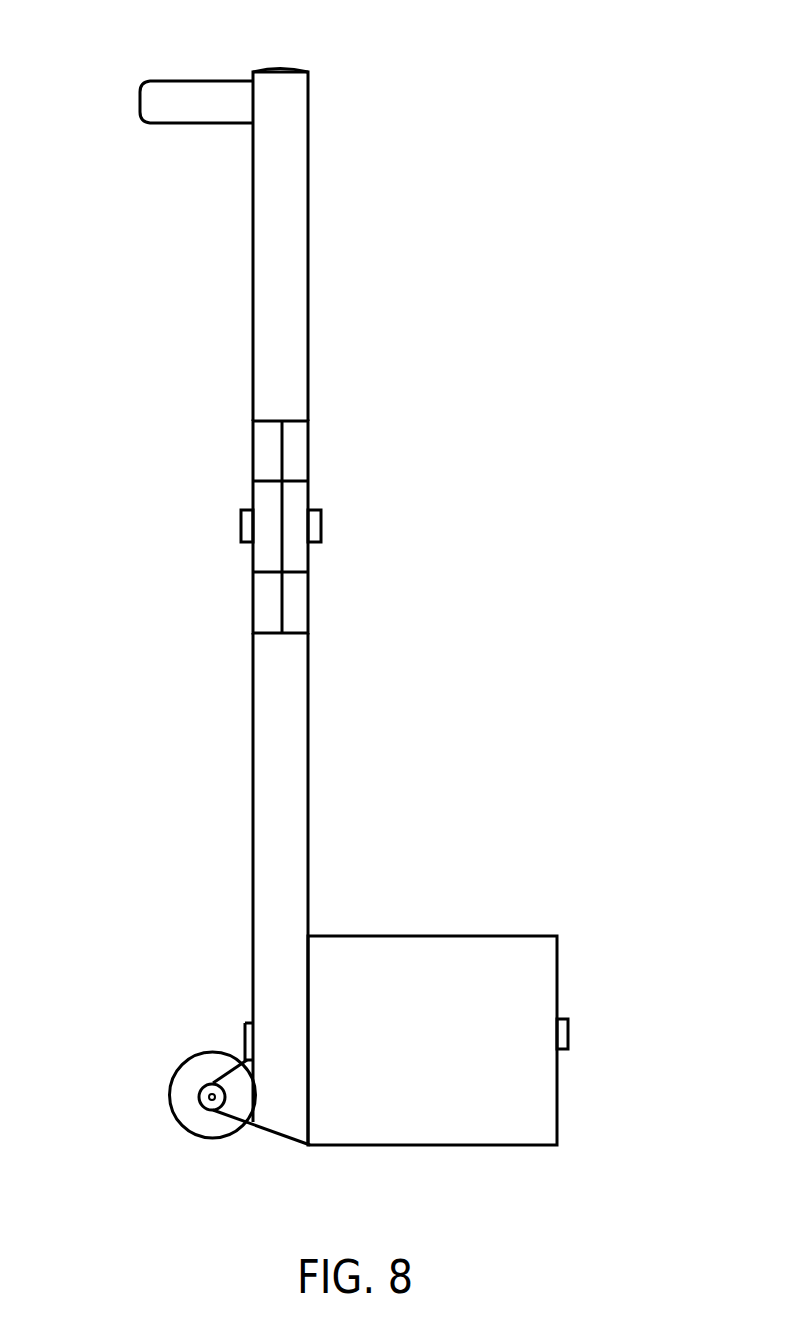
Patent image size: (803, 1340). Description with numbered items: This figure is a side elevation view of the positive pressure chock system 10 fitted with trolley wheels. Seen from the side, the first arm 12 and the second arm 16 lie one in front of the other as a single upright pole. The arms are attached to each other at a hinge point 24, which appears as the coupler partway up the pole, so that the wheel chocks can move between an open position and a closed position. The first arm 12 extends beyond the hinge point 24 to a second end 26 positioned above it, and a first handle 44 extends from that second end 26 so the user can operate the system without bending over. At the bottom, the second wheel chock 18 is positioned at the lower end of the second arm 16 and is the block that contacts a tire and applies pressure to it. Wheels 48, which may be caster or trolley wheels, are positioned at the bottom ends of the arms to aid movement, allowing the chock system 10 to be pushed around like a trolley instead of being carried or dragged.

The positive pressure chock system 10 is at (622, 190).
The first arm 12 is at (253, 348).
The second arm 16 is at (253, 845).
The second wheel chock 18 is at (485, 938).
The hinge point 24 is at (322, 527).
The second end 26 is at (278, 68).
The first handle 44 is at (140, 103).
The wheels 48 is at (170, 1100).